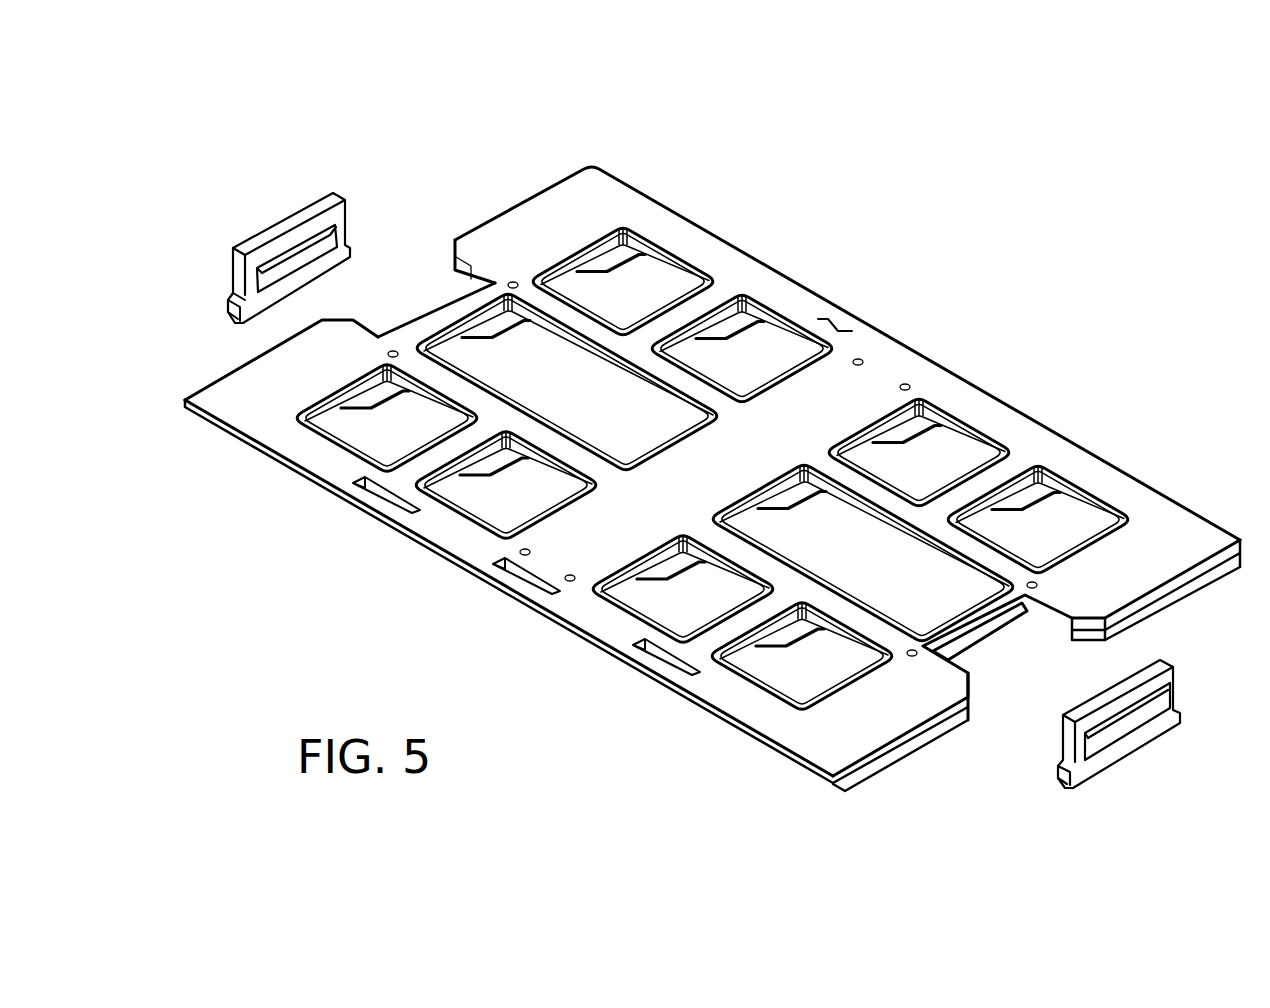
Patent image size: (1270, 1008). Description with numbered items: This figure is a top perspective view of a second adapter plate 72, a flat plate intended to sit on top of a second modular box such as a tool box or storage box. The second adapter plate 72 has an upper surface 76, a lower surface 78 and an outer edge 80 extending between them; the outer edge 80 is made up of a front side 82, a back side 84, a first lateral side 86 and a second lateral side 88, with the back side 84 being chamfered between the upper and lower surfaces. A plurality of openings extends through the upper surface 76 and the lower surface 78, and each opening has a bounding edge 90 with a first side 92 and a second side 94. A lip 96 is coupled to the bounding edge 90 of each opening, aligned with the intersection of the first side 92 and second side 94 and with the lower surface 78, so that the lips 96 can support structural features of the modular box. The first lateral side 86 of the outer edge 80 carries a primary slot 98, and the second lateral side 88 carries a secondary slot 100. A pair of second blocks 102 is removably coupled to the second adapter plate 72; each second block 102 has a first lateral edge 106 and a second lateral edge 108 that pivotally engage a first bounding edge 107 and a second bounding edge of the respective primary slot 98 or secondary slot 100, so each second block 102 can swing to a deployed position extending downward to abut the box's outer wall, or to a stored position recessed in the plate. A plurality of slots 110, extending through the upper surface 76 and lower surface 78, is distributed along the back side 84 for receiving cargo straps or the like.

The second adapter plate 72 is at (632, 188).
The upper surface 76 is at (850, 325).
The lower surface 78 is at (932, 732).
The outer edge 80 is at (905, 443).
The front side 82 is at (792, 270).
The back side 84 is at (715, 716).
The first lateral side 86 is at (523, 202).
The second lateral side 88 is at (1222, 566).
The bounding edge 90 is at (677, 276).
The first side 92 is at (322, 413).
The second side 94 is at (450, 411).
The lip 96 is at (613, 255).
The primary slot 98 is at (458, 305).
The secondary slot 100 is at (1000, 630).
The second block 102 is at (317, 208).
The first lateral edge 106 is at (228, 317).
The first bounding edge 107 is at (968, 672).
The second lateral edge 108 is at (1043, 623).
The slot 110 is at (373, 492).